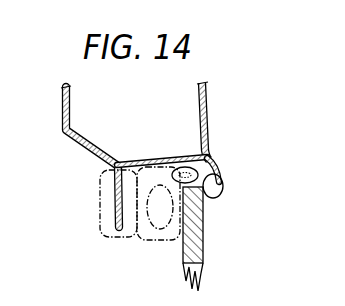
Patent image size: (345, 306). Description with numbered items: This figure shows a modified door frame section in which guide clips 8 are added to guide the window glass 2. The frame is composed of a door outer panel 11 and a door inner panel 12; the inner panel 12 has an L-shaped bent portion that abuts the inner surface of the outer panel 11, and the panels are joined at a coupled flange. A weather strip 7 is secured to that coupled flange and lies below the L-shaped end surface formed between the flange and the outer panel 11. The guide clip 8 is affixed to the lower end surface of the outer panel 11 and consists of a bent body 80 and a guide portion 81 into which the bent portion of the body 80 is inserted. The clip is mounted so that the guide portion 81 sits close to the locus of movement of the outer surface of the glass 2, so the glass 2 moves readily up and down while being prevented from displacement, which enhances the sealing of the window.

The glass 2 is at (203, 228).
The weather strip 7 is at (141, 236).
The guide clip 8 is at (218, 158).
The door outer panel 11 is at (210, 134).
The door inner panel 12 is at (96, 150).
The bent body 80 is at (163, 160).
The guide portion 81 is at (224, 191).